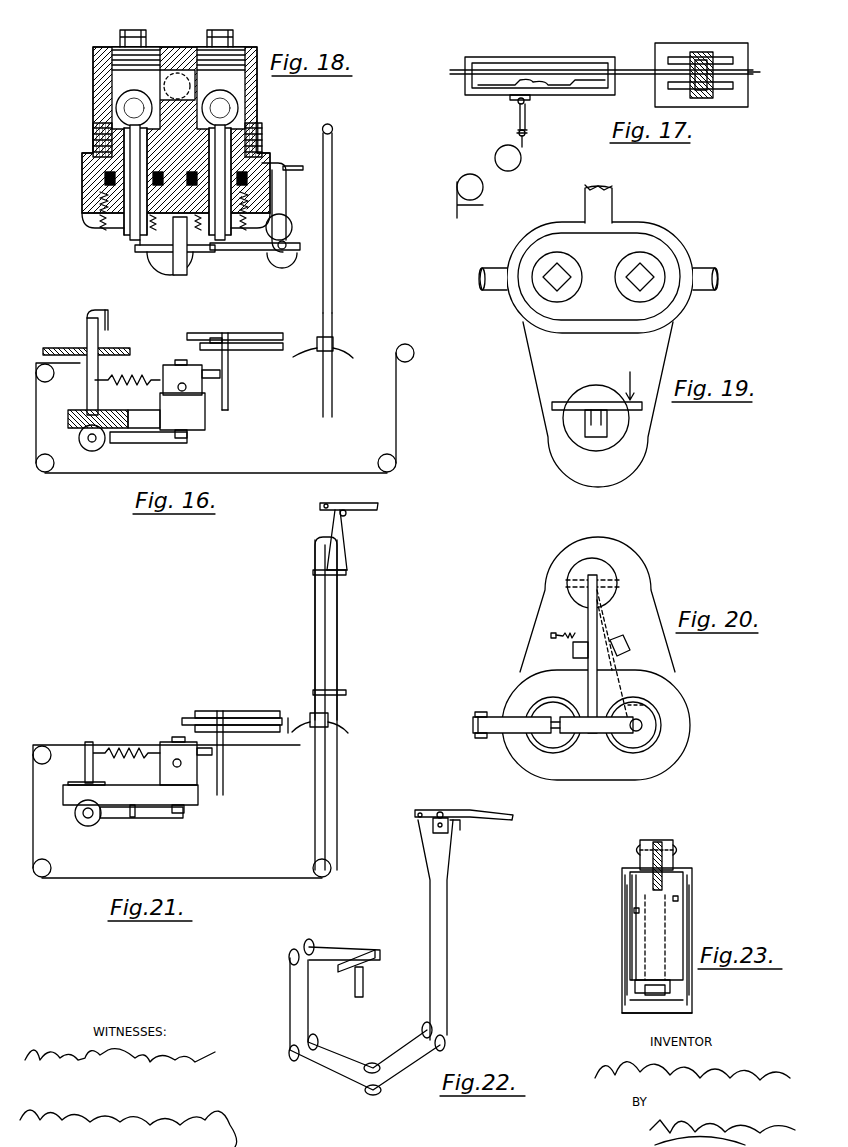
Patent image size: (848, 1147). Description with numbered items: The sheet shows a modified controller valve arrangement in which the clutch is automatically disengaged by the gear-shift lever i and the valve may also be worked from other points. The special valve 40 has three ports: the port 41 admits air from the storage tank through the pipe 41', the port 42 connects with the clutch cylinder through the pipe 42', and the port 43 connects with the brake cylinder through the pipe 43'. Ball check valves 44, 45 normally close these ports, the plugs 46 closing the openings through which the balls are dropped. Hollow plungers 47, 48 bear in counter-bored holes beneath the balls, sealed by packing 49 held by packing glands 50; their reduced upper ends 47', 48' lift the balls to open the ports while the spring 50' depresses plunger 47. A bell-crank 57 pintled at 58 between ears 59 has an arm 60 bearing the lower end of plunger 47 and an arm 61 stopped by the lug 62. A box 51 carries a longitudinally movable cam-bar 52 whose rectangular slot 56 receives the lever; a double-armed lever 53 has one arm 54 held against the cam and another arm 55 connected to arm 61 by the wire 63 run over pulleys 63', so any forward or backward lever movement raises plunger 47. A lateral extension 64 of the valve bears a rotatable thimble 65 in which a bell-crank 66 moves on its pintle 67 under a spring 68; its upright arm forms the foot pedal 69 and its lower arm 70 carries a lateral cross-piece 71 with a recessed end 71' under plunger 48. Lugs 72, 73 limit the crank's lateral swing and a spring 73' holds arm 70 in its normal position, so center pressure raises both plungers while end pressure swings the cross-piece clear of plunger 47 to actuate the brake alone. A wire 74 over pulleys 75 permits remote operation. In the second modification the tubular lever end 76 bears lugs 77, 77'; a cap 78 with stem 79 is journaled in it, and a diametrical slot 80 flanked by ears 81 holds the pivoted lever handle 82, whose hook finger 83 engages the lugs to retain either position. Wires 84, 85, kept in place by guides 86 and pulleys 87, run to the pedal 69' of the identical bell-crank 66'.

In FIG. 18, the valve 40 is at (143, 250).
In FIG. 19, the valve 40 is at (604, 281).
In FIG. 16, the valve 40 is at (192, 412).
In FIG. 20, the valve 40 is at (601, 725).
In FIG. 21, the valve 40 is at (130, 786).
In FIG. 18, the port 41 is at (176, 56).
In FIG. 19, the pipe 41' is at (617, 204).
In FIG. 16, the pipe 41' is at (191, 372).
In FIG. 21, the pipe 41' is at (189, 761).
In FIG. 18, the port 42 is at (269, 139).
In FIG. 19, the pipe 42' is at (491, 266).
In FIG. 18, the port 43 is at (82, 134).
In FIG. 19, the pipe 43' is at (714, 266).
In FIG. 18, the ball check valve 44 is at (226, 93).
In FIG. 18, the ball check valve 45 is at (128, 100).
In FIG. 18, the plug 46 is at (131, 30).
In FIG. 19, the plug 46 is at (632, 273).
In FIG. 18, the hollow plunger 47 is at (197, 209).
In FIG. 20, the hollow plunger 47 is at (567, 749).
In FIG. 18, the upper end of plunger 47' is at (250, 167).
In FIG. 18, the hollow plunger 48 is at (159, 230).
In FIG. 20, the hollow plunger 48 is at (647, 747).
In FIG. 18, the upper end of plunger 48' is at (82, 122).
In FIG. 18, the packing 49 is at (105, 175).
In FIG. 18, the packing gland 50 is at (180, 199).
In FIG. 18, the spring 50' is at (153, 251).
In FIG. 17, the box 51 is at (465, 88).
In FIG. 16, the box 51 is at (268, 352).
In FIG. 21, the box 51 is at (262, 733).
In FIG. 17, the cam-bar 52 is at (455, 68).
In FIG. 16, the cam-bar 52 is at (285, 336).
In FIG. 21, the cam-bar 52 is at (290, 733).
In FIG. 17, the double-armed lever 53 is at (517, 100).
In FIG. 16, the double-armed lever 53 is at (228, 368).
In FIG. 21, the double-armed lever 53 is at (220, 753).
In FIG. 17, the arm 54 is at (545, 88).
In FIG. 17, the arm 55 is at (527, 117).
In FIG. 17, the rectangular slot 56 is at (703, 55).
In FIG. 18, the bell-crank 57 is at (283, 260).
In FIG. 18, the pintle 58 is at (286, 245).
In FIG. 18, the ears 59 is at (290, 225).
In FIG. 20, the ears 59 is at (478, 712).
In FIG. 18, the arm 60 is at (240, 250).
In FIG. 20, the arm 60 is at (510, 717).
In FIG. 18, the arm 61 is at (288, 181).
In FIG. 18, the lug 62 is at (270, 165).
In FIG. 18, the wire 63 is at (300, 159).
In FIG. 17, the wire 63 is at (454, 200).
In FIG. 16, the wire 63 is at (238, 413).
In FIG. 17, the pulley 63' is at (501, 169).
In FIG. 19, the lateral extension 64 is at (538, 357).
In FIG. 16, the lateral extension 64 is at (133, 417).
In FIG. 20, the lateral extension 64 is at (545, 565).
In FIG. 19, the thimble 65 is at (620, 425).
In FIG. 16, the thimble 65 is at (85, 448).
In FIG. 20, the thimble 65 is at (600, 568).
In FIG. 21, the thimble 65 is at (87, 826).
In FIG. 16, the bell-crank 66 is at (86, 372).
In FIG. 21, the bell-crank 66' is at (105, 822).
In FIG. 16, the pintle 67 is at (88, 438).
In FIG. 16, the spring 68 is at (127, 380).
In FIG. 21, the spring 68 is at (140, 753).
In FIG. 19, the foot pedal 69 is at (574, 404).
In FIG. 16, the foot pedal 69 is at (74, 362).
In FIG. 21, the pedal 69' is at (99, 751).
In FIG. 22, the pedal 69' is at (376, 973).
In FIG. 16, the arm 70 is at (140, 443).
In FIG. 20, the arm 70 is at (588, 598).
In FIG. 21, the arm 70 is at (148, 820).
In FIG. 18, the lateral cross-piece 71 is at (175, 270).
In FIG. 16, the lateral cross-piece 71 is at (195, 444).
In FIG. 20, the lateral cross-piece 71 is at (669, 745).
In FIG. 21, the lateral cross-piece 71 is at (187, 826).
In FIG. 18, the recessed end 71' is at (135, 268).
In FIG. 20, the recessed end 71' is at (634, 753).
In FIG. 18, the lug 72 is at (180, 275).
In FIG. 20, the lug 72 is at (573, 645).
In FIG. 20, the lug 73 is at (655, 646).
In FIG. 21, the lug 73 is at (133, 830).
In FIG. 20, the spring 73' is at (564, 624).
In FIG. 16, the wire 74 is at (335, 472).
In FIG. 16, the pulley 75 is at (45, 472).
In FIG. 21, the tube 76 is at (340, 540).
In FIG. 23, the tube 76 is at (640, 937).
In FIG. 21, the lug 77 is at (373, 540).
In FIG. 23, the lug 77 is at (688, 910).
In FIG. 23, the lug 77' is at (711, 890).
In FIG. 23, the cap 78 is at (630, 880).
In FIG. 23, the stem 79 is at (670, 990).
In FIG. 23, the diametrical slot 80 is at (653, 888).
In FIG. 23, the ears 81 is at (665, 840).
In FIG. 21, the lever handle 82 is at (378, 507).
In FIG. 22, the lever handle 82 is at (455, 812).
In FIG. 23, the lever handle 82 is at (640, 862).
In FIG. 21, the hook finger 83 is at (348, 513).
In FIG. 22, the hook finger 83 is at (458, 825).
In FIG. 21, the wire 84 is at (337, 823).
In FIG. 22, the wire 84 is at (430, 915).
In FIG. 21, the wire 85 is at (337, 803).
In FIG. 22, the wire 85 is at (447, 915).
In FIG. 21, the guide 86 is at (346, 577).
In FIG. 21, the pulley 87 is at (42, 765).
In FIG. 22, the pulley 87 is at (290, 960).
In FIG. 18, the gear-shift lever i is at (333, 253).
In FIG. 17, the gear-shift lever i is at (757, 71).
In FIG. 16, the gear-shift lever i is at (333, 402).